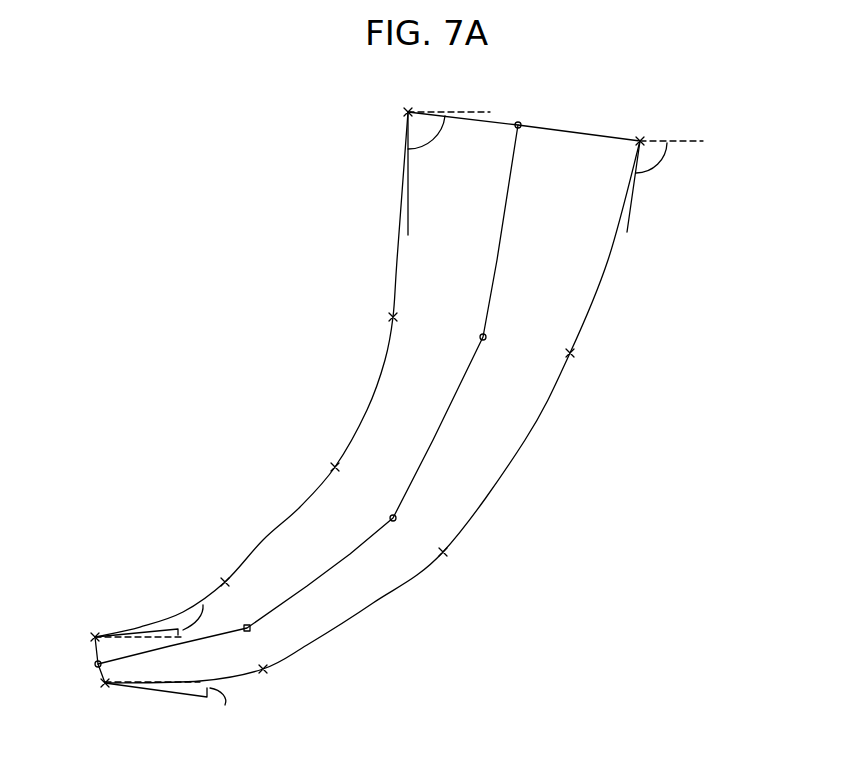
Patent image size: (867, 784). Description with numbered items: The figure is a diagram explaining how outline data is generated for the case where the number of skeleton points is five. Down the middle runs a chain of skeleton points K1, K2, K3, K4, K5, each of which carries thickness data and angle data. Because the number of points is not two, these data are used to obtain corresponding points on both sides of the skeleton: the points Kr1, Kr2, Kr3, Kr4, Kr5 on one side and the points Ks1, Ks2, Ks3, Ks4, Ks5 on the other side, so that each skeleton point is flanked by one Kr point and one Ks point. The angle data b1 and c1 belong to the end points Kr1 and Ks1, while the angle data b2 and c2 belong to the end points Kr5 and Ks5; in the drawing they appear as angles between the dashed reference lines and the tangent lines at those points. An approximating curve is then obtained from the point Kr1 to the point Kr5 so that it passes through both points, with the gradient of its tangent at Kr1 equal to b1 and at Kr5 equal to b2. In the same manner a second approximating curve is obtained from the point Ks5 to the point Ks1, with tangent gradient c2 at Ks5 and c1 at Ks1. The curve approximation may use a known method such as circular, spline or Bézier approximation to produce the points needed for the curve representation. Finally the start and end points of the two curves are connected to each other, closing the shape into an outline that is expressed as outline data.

The point on one side Ks1 is at (377, 101).
The point on one side Ks2 is at (360, 313).
The point on one side Ks3 is at (305, 461).
The point on one side Ks4 is at (217, 560).
The point on one side Ks5 is at (84, 619).
The skeleton point K1 is at (535, 143).
The skeleton point K2 is at (502, 339).
The skeleton point K3 is at (373, 514).
The skeleton point K4 is at (234, 615).
The skeleton point K5 is at (75, 669).
The point on other side Kr1 is at (648, 122).
The point on other side Kr2 is at (595, 358).
The point on other side Kr3 is at (472, 565).
The point on other side Kr4 is at (287, 684).
The point on other side Kr5 is at (99, 706).
The angle data c1 is at (441, 131).
The angle data c2 is at (203, 605).
The angle data b1 is at (664, 158).
The angle data b2 is at (225, 705).